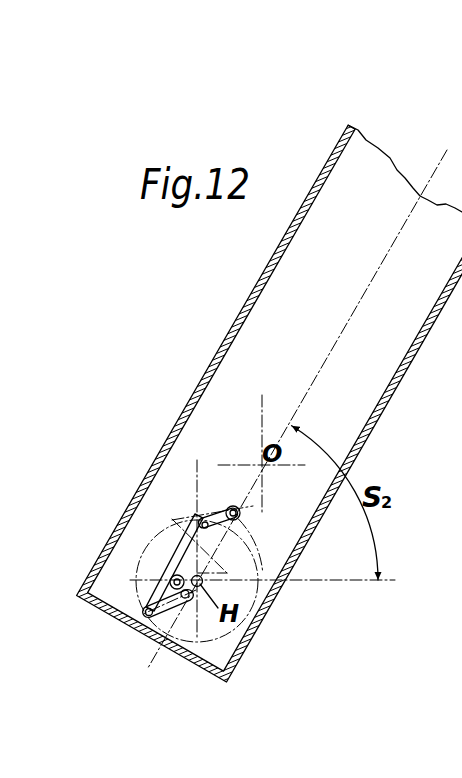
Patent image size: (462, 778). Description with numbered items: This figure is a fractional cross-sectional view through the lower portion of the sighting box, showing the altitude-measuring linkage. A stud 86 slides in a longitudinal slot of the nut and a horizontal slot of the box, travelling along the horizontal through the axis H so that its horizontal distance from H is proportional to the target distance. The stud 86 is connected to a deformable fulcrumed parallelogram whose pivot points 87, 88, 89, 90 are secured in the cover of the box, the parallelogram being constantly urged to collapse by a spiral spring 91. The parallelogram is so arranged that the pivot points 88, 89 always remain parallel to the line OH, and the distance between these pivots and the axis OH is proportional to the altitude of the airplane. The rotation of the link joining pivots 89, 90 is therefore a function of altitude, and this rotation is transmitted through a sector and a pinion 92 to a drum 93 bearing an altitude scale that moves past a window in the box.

The stud 86 is at (171, 574).
The pivot point 87 is at (168, 582).
The pivot point 88 is at (147, 612).
The pivot point 89 is at (202, 521).
The pivot point 90 is at (228, 509).
The spiral spring 91 is at (170, 516).
The pinion 92 is at (190, 575).
The drum 93 is at (137, 592).